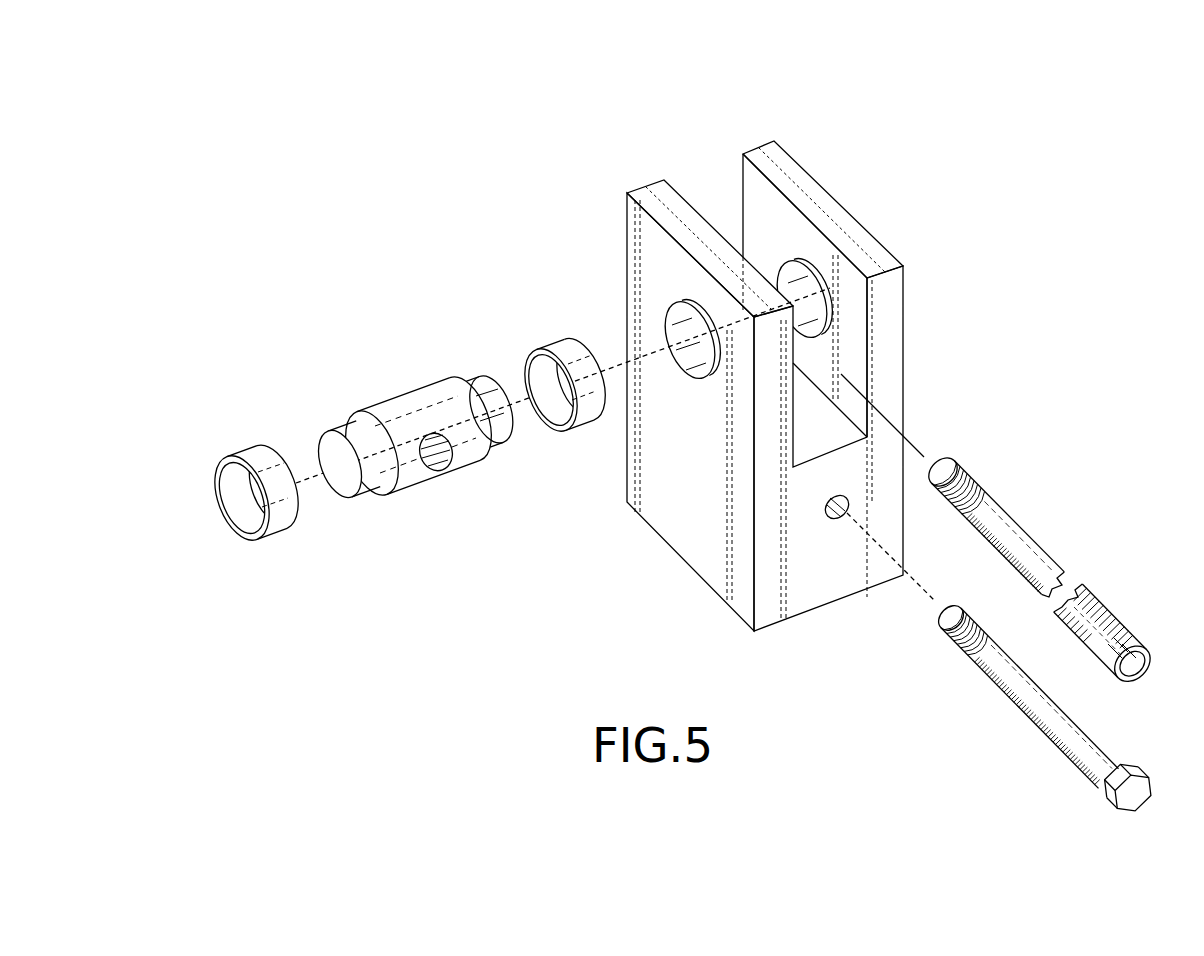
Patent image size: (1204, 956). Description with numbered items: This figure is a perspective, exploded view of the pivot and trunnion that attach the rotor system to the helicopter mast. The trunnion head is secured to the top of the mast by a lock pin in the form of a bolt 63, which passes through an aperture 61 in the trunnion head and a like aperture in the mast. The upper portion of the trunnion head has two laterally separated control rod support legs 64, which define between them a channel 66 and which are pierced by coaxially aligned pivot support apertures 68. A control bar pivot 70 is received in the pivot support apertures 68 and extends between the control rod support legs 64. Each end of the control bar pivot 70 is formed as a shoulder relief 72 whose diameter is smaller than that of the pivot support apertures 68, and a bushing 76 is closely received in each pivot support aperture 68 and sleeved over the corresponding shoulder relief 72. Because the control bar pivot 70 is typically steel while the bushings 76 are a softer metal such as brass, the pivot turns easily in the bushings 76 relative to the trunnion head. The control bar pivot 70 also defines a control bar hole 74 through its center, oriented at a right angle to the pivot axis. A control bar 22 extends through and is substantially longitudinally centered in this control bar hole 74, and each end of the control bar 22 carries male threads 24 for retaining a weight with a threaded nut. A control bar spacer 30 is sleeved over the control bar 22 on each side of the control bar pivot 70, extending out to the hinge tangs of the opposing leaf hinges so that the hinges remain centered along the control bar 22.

The control bar 22 is at (1017, 521).
The male threads 24 is at (962, 470).
The control bar spacer 30 is at (1122, 620).
The aperture 61 is at (833, 520).
The bolt 63 is at (1060, 747).
The control rod support legs 64 is at (644, 183).
The channel 66 is at (711, 182).
The pivot support apertures 68 is at (815, 278).
The control bar pivot 70 is at (392, 398).
The shoulder relief 72 is at (342, 428).
The control bar hole 74 is at (418, 472).
The bushing 76 is at (217, 492).